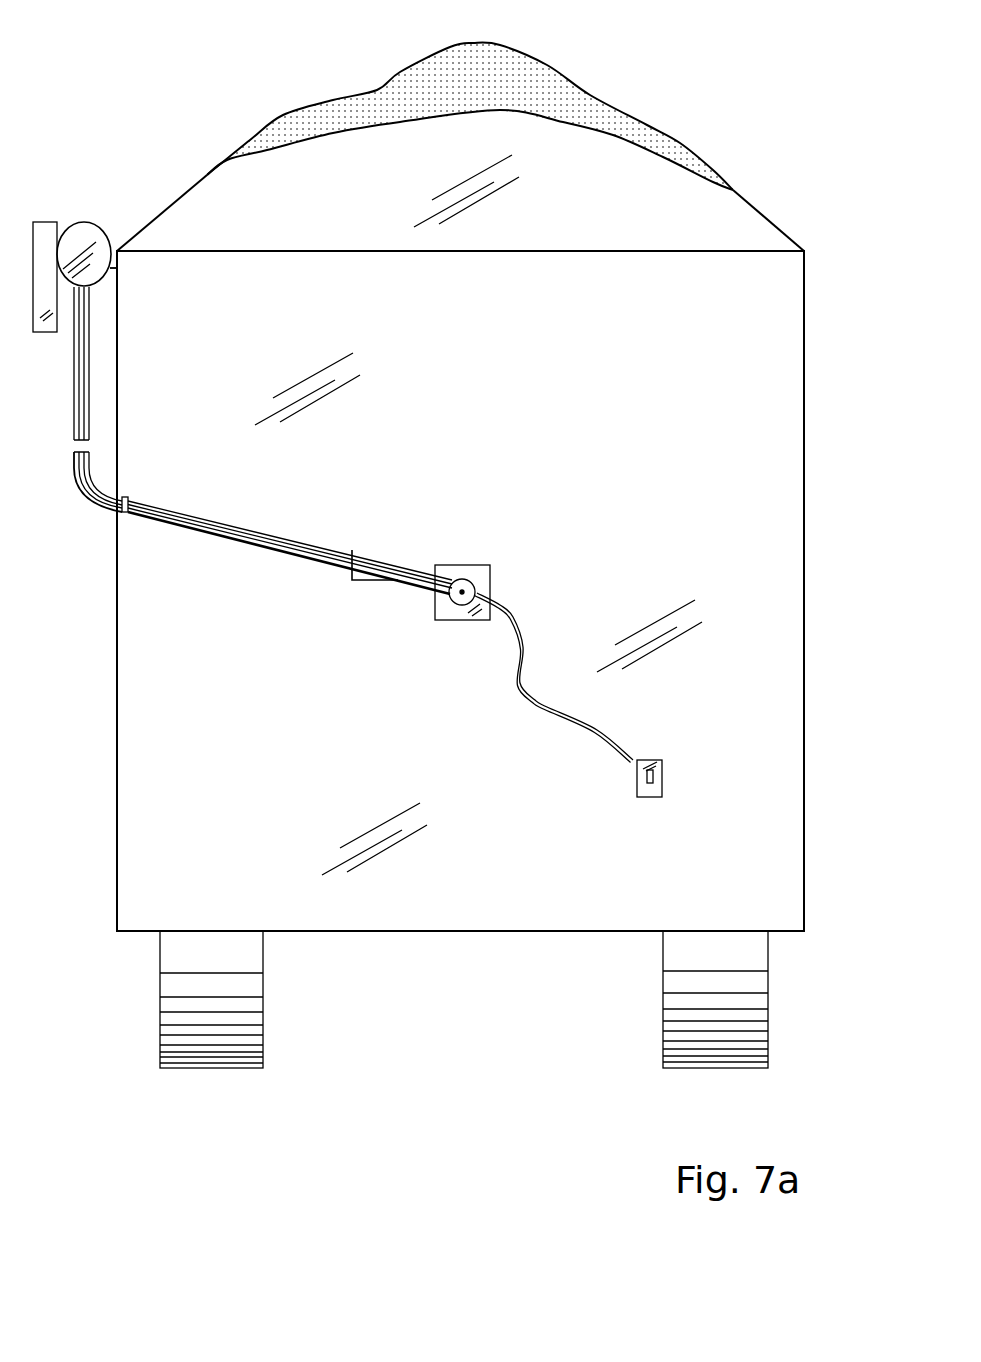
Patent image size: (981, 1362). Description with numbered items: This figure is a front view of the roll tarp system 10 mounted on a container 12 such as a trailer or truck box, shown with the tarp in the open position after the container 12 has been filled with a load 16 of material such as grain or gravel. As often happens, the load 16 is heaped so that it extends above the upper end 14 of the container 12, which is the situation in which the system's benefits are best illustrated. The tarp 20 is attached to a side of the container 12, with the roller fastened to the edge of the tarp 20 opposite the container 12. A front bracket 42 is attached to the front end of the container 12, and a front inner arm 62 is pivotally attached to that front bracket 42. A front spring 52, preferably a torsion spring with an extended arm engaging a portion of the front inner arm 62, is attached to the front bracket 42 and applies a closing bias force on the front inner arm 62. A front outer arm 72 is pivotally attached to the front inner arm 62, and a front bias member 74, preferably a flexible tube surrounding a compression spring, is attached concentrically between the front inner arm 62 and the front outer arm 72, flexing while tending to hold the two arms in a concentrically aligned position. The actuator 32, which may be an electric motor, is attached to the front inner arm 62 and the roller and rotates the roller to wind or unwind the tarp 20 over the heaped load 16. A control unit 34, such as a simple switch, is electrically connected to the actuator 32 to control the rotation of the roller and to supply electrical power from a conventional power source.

The roll tarp system 10 is at (133, 984).
The container 12 is at (402, 933).
The upper end 14 is at (577, 170).
The load 16 is at (405, 93).
The tarp 20 is at (115, 250).
The actuator 32 is at (80, 243).
The control unit 34 is at (663, 758).
The front bracket 42 is at (478, 583).
The front spring 52 is at (457, 583).
The front inner arm 62 is at (253, 547).
The front outer arm 72 is at (87, 360).
The front bias member 74 is at (97, 500).